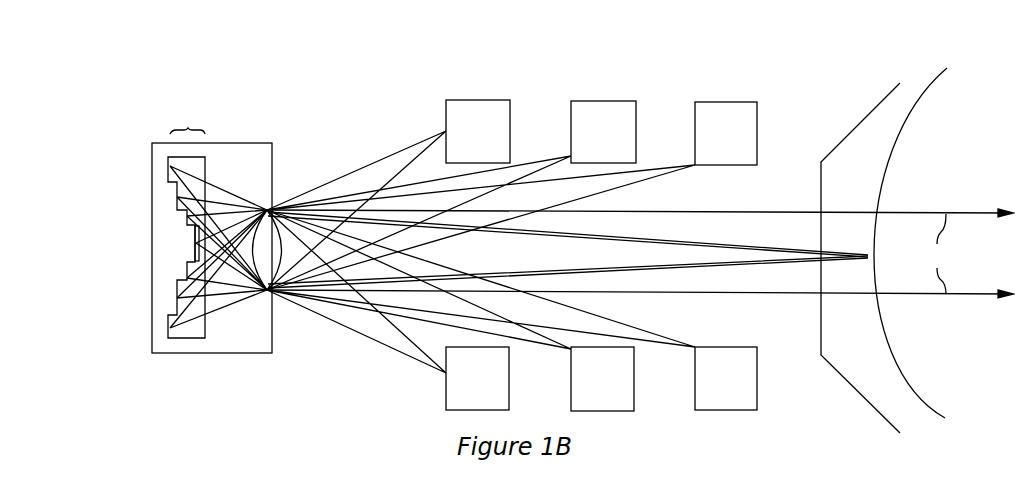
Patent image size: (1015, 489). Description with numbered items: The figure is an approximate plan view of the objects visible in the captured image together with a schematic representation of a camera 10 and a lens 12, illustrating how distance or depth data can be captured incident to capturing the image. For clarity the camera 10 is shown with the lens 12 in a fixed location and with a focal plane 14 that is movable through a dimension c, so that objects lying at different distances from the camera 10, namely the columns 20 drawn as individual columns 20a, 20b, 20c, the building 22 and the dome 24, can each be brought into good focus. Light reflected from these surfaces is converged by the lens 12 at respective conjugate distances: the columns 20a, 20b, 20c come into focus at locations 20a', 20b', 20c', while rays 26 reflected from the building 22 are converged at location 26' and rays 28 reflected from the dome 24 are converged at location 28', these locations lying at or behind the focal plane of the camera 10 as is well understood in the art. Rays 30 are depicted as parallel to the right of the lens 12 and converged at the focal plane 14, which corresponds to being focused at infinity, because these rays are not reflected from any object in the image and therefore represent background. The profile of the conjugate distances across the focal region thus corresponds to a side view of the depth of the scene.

The camera 10 is at (272, 143).
The lens 12 is at (270, 227).
The focal plane 14 is at (205, 170).
The dimension C c is at (187, 123).
The columns 20 is at (196, 259).
The column 20a is at (478, 110).
The column 20b is at (603, 110).
The column 20c is at (718, 109).
The focus location 20a' is at (168, 283).
The focus location 20b' is at (171, 266).
The focus location 20c' is at (172, 250).
The rays 26 is at (568, 250).
The focus location 26' is at (152, 233).
The rays 28 is at (568, 255).
The focus location 28' is at (189, 250).
The rays 30 is at (640, 253).
The building 22 is at (855, 127).
The dome 24 is at (925, 112).